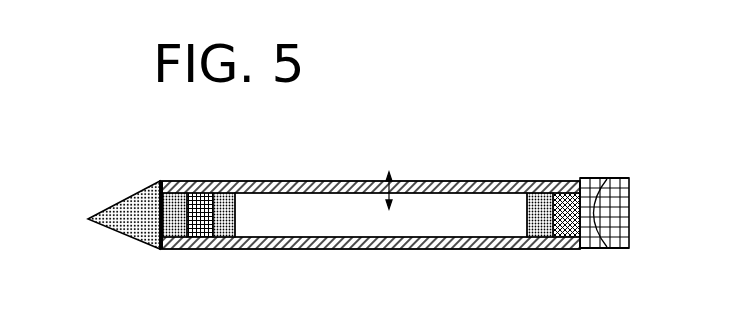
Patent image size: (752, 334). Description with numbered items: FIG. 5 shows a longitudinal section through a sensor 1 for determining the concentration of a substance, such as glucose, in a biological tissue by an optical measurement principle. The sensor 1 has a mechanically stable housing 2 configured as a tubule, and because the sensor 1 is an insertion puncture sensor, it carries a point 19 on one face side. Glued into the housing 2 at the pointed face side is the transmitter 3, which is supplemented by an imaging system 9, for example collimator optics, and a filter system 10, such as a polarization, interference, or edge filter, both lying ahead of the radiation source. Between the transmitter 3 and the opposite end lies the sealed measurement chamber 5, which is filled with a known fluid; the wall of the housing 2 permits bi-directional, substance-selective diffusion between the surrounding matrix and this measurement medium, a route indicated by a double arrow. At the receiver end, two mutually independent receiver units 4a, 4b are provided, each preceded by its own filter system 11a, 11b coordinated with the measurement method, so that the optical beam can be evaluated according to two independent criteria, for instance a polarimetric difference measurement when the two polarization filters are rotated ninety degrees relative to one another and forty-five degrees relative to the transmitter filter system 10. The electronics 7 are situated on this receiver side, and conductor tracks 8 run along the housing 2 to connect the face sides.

The sensor 1 is at (486, 106).
The housing 2 is at (378, 179).
The transmitter 3 is at (173, 182).
The receiver unit 4a is at (605, 179).
The receiver unit 4b is at (605, 247).
The measurement chamber 5 is at (481, 203).
The electronics 7 is at (630, 212).
The conductor tracks 8 is at (397, 250).
The imaging system 9 is at (202, 182).
The filter system 10 is at (227, 182).
The filter system 11a is at (543, 181).
The filter system 11b is at (542, 250).
The point 19 is at (90, 222).